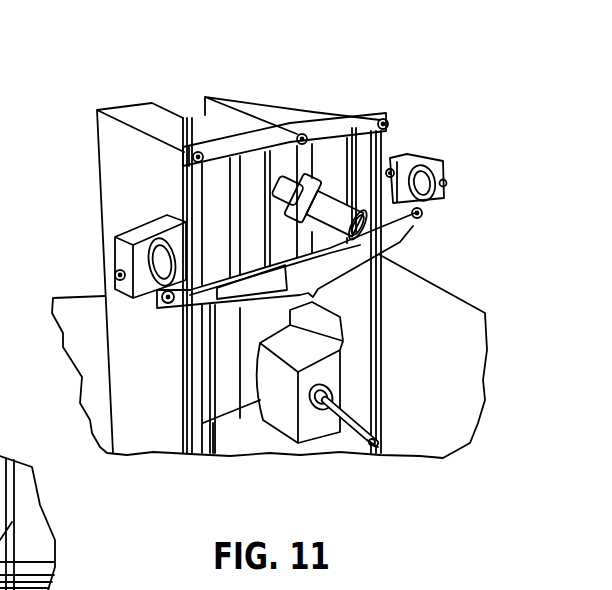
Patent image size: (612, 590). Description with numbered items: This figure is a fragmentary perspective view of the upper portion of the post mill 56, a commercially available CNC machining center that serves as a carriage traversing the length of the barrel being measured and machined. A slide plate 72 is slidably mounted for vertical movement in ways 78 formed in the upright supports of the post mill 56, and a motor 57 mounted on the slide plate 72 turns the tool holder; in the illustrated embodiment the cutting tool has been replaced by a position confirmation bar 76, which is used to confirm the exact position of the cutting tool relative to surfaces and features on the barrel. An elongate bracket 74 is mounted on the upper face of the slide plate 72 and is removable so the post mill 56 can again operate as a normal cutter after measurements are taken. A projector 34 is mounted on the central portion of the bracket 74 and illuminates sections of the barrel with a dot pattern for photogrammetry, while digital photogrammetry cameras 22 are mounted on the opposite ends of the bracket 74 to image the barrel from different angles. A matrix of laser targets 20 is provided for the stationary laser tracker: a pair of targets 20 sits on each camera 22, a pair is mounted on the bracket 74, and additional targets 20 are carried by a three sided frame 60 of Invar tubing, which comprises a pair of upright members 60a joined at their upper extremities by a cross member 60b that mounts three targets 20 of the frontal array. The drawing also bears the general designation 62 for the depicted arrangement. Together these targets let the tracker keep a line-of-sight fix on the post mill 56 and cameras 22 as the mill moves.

The laser targets 20 is at (300, 137).
The digital photogrammetry cameras 22 is at (68, 352).
The projector 34 is at (335, 212).
The post mill 56 is at (135, 117).
The motor 57 is at (305, 430).
The three sided frame 60 is at (187, 127).
The upright members 60a is at (182, 186).
The cross member 60b is at (362, 120).
The assembly 62 is at (0, 19).
The slide plate 72 is at (223, 410).
The elongate bracket 74 is at (205, 293).
The position confirmation bar 76 is at (373, 437).
The ways 78 is at (357, 124).